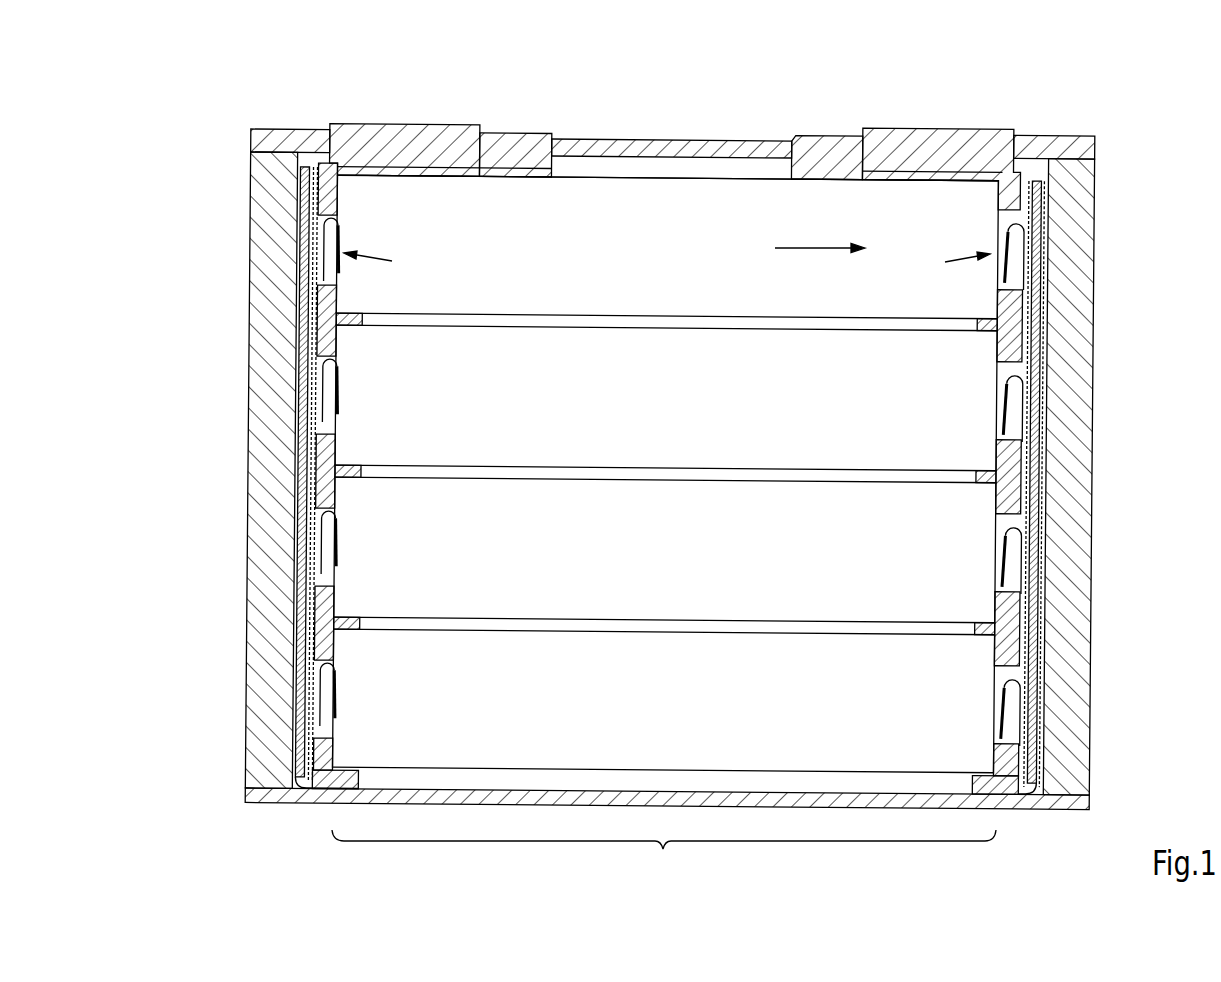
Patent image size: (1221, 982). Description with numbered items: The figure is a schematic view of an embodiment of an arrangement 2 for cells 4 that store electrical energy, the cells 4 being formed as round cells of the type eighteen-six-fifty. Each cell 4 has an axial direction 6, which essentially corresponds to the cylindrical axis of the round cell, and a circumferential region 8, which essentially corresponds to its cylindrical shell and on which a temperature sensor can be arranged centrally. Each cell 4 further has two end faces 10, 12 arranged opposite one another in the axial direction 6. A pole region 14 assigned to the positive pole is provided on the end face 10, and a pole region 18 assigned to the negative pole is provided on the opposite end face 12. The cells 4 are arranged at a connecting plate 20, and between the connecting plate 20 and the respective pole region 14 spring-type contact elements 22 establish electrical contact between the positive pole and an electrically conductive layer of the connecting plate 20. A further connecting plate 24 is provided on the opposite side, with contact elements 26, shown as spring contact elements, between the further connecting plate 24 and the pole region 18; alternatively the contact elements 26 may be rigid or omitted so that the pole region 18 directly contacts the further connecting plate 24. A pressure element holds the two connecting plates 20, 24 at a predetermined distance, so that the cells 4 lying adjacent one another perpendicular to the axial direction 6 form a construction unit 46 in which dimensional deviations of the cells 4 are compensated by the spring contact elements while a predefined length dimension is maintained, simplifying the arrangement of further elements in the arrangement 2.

The arrangement 2 is at (176, 91).
The cells 4 is at (659, 261).
The axial direction 6 is at (812, 243).
The circumferential region 8 is at (653, 160).
The end face 10 is at (1036, 213).
The end face 12 is at (297, 212).
The pole region 14 is at (949, 268).
The pole region 18 is at (386, 264).
The connecting plate 20 is at (1040, 335).
The contact elements 22 is at (1026, 245).
The further connecting plate 24 is at (298, 328).
The contact elements 26 is at (322, 242).
The construction unit 46 is at (664, 857).